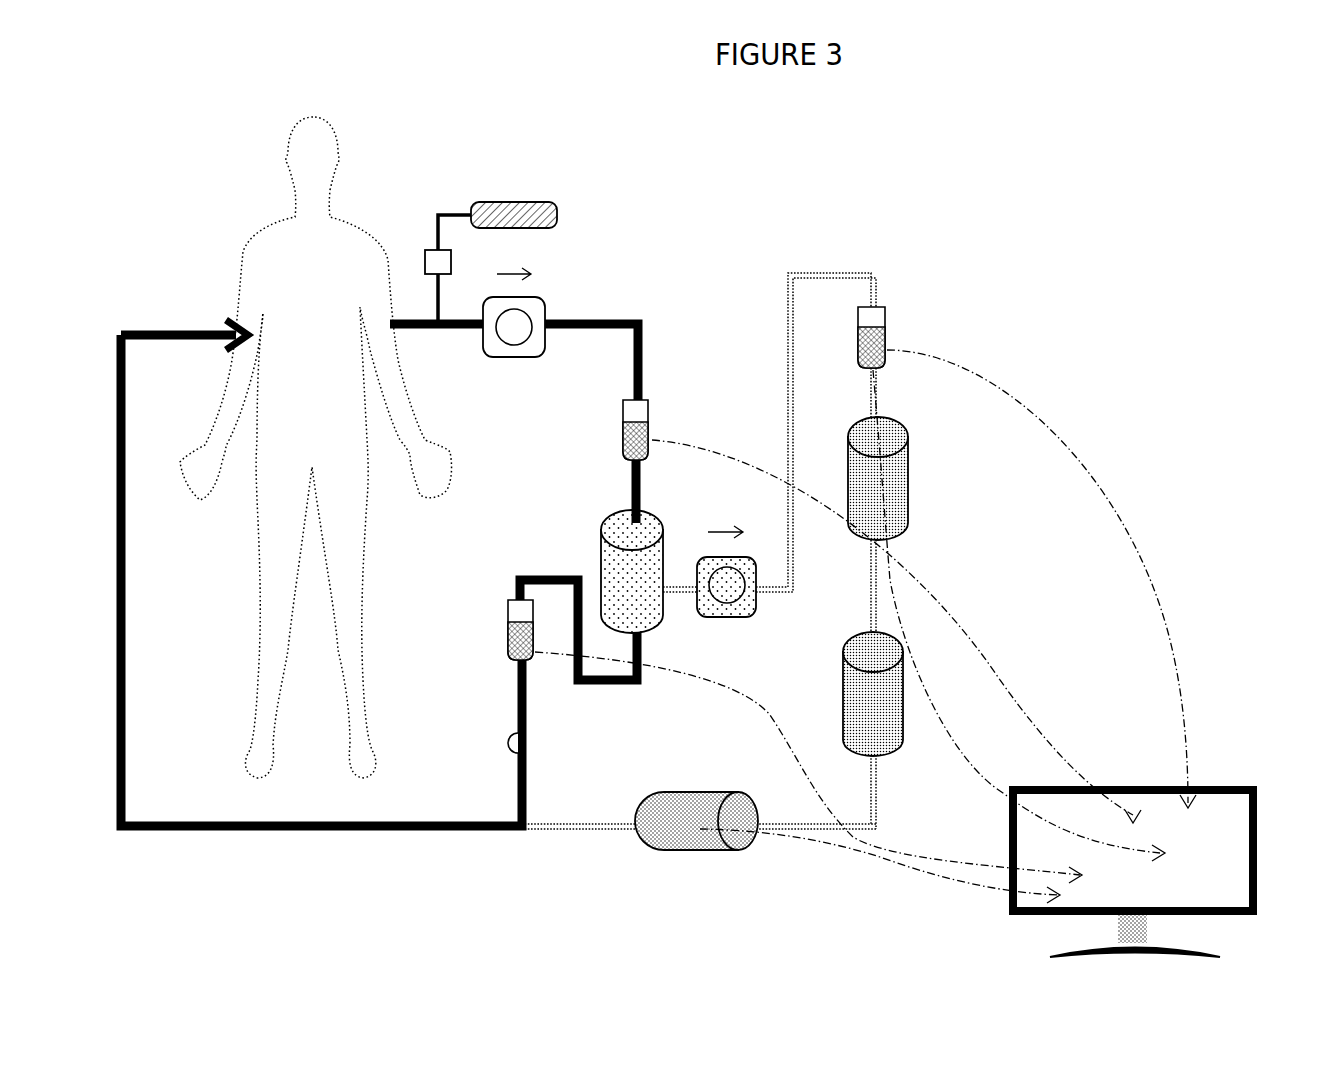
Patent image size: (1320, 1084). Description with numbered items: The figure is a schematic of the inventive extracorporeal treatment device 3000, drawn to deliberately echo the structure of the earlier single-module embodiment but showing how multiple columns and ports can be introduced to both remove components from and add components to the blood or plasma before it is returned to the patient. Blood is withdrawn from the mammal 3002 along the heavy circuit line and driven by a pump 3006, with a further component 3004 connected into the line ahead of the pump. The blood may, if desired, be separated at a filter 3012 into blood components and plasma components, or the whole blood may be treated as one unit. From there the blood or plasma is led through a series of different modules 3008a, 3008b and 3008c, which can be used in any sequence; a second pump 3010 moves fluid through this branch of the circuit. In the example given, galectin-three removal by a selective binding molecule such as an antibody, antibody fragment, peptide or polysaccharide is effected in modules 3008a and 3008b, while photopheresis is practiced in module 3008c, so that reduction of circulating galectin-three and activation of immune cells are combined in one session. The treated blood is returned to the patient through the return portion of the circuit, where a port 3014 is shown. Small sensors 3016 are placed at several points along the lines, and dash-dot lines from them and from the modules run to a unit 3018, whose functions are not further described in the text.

The extracorporeal blood circuit 3000 is at (490, 832).
The patient 3002 is at (318, 115).
The anticoagulant source 3004 is at (557, 218).
The blood pump 3006 is at (547, 308).
The module 3008a is at (908, 470).
The module 3008b is at (903, 707).
The module 3008c is at (710, 852).
The dialysate pump 3010 is at (757, 603).
The dialyzer 3012 is at (598, 572).
The return port 3014 is at (510, 745).
The sensor 3016 is at (650, 433).
The controller display 3018 is at (1225, 820).